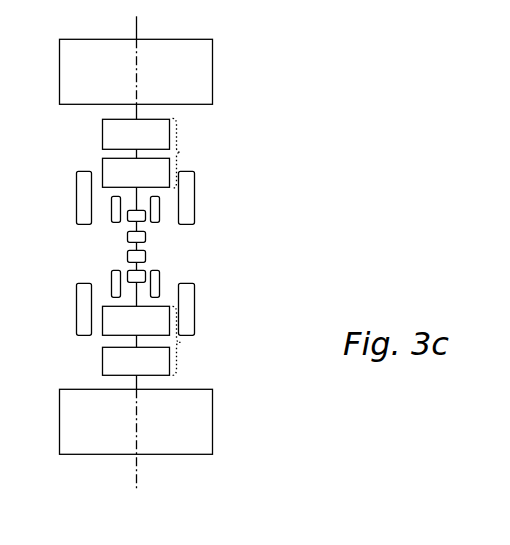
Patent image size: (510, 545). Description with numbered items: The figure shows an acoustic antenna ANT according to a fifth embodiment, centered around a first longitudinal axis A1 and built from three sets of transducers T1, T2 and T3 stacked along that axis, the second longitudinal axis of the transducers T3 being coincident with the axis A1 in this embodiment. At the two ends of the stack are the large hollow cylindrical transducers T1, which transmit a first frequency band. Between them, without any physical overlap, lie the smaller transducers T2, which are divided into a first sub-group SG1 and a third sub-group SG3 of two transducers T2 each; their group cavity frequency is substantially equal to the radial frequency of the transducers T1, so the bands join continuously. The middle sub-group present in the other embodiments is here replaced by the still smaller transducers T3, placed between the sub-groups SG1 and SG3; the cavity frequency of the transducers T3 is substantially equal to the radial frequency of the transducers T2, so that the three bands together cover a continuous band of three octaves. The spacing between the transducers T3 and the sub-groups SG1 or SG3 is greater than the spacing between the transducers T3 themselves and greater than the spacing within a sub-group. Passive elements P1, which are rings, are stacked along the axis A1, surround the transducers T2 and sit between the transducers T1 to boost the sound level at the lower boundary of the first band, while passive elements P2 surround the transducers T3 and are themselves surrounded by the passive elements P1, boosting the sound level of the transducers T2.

The first longitudinal axis A1 is at (137, 24).
The transducer of the first set T1 is at (213, 66).
The transducer of the second set T2 is at (103, 162).
The transducer of the third set T3 is at (147, 235).
The first sub-group SG1 is at (182, 150).
The third sub-group SG3 is at (182, 340).
The passive element P1 is at (77, 182).
The passive element P2 is at (116, 220).
The acoustic antenna ANT is at (320, 218).